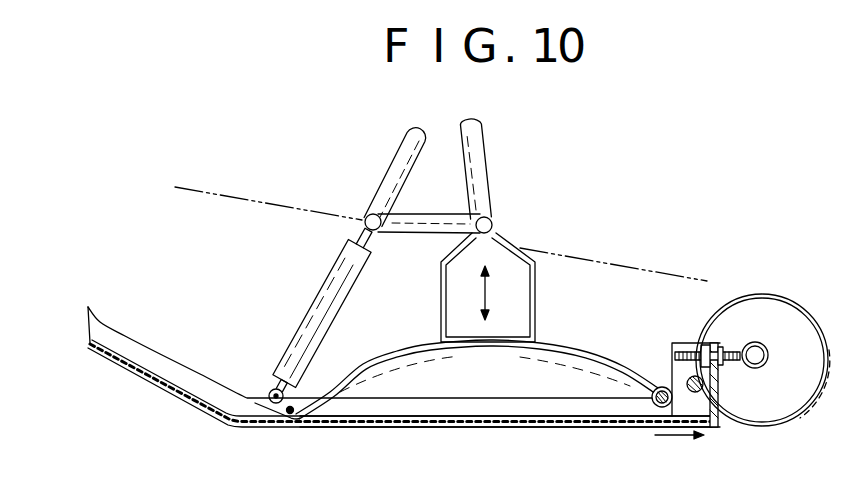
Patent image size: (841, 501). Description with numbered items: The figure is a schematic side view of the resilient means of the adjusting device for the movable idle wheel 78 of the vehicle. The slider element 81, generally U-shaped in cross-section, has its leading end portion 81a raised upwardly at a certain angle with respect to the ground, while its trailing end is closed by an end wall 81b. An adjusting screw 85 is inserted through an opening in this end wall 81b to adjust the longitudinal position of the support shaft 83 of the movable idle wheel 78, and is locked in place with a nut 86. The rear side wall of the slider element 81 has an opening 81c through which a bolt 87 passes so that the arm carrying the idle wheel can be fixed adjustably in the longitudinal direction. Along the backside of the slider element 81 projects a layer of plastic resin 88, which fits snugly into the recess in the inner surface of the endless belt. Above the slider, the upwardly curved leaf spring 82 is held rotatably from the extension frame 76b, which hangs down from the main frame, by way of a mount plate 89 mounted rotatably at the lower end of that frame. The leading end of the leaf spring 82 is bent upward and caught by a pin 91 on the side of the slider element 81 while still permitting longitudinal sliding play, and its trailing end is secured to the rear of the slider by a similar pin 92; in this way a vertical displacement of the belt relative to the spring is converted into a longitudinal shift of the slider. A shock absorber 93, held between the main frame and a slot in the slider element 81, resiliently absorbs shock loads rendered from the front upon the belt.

The extension frame 76b is at (494, 221).
The movable idle wheel 78 is at (768, 315).
The slider element 81 is at (188, 370).
The leading end portion 81a is at (194, 417).
The end wall 81b is at (708, 402).
The opening 81c is at (682, 394).
The leaf spring 82 is at (590, 357).
The support shaft 83 is at (757, 367).
The adjusting screw 85 is at (680, 350).
The nut 86 is at (705, 345).
The bolt 87 is at (688, 378).
The layer of plastic resin 88 is at (485, 429).
The mount plate 89 is at (521, 256).
The pin 91 is at (305, 428).
The pin 92 is at (657, 406).
The shock absorber 93 is at (358, 278).